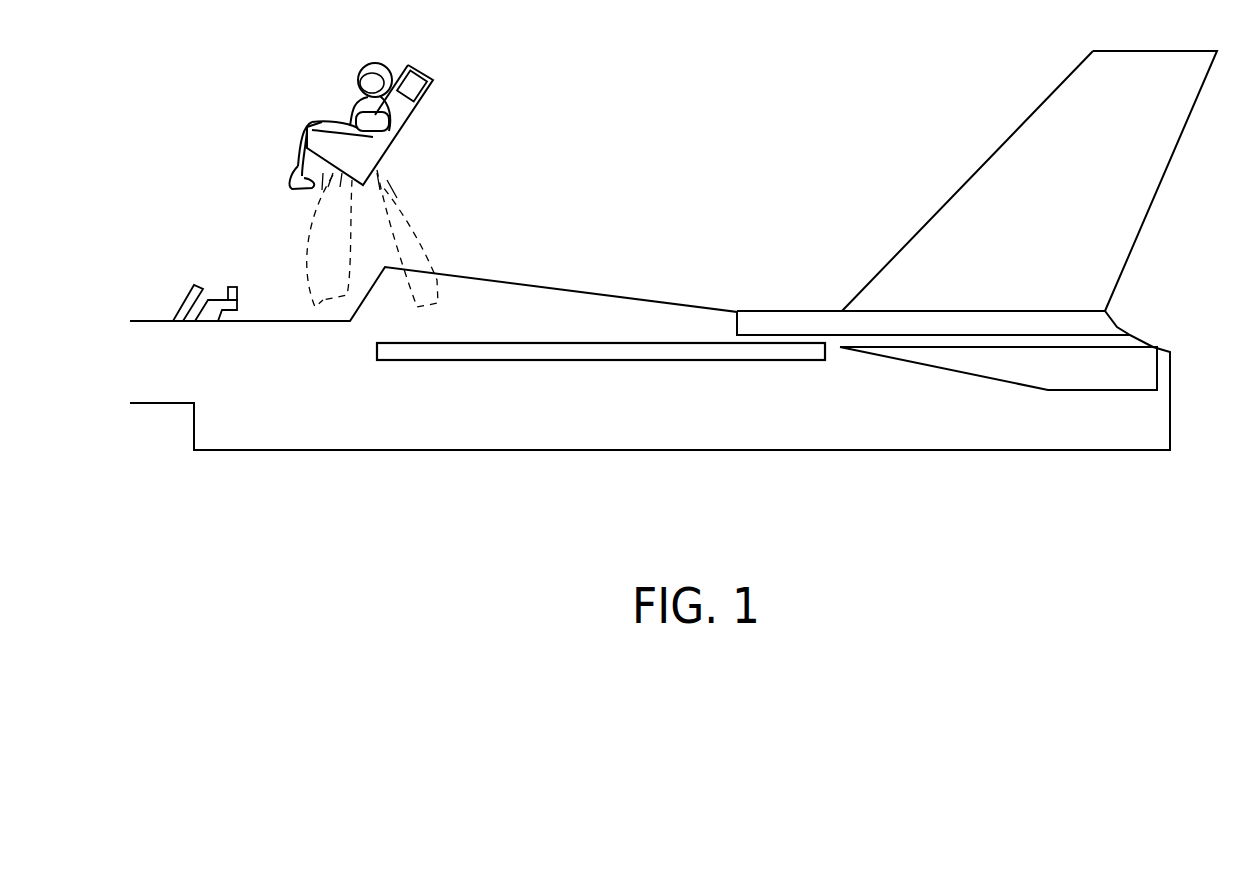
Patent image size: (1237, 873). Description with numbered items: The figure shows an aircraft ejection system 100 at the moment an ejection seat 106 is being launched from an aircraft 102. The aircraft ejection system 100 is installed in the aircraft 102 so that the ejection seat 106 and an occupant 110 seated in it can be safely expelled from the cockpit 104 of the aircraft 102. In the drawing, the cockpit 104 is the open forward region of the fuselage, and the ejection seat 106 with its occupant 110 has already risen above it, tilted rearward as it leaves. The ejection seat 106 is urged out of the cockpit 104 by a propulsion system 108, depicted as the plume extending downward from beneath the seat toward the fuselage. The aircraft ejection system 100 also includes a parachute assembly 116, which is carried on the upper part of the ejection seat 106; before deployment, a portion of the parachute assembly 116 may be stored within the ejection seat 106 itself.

The aircraft ejection system 100 is at (542, 157).
The aircraft 102 is at (658, 412).
The cockpit 104 is at (263, 303).
The ejection seat 106 is at (367, 152).
The propulsion system 108 is at (393, 217).
The occupant 110 is at (363, 63).
The parachute assembly 116 is at (425, 79).